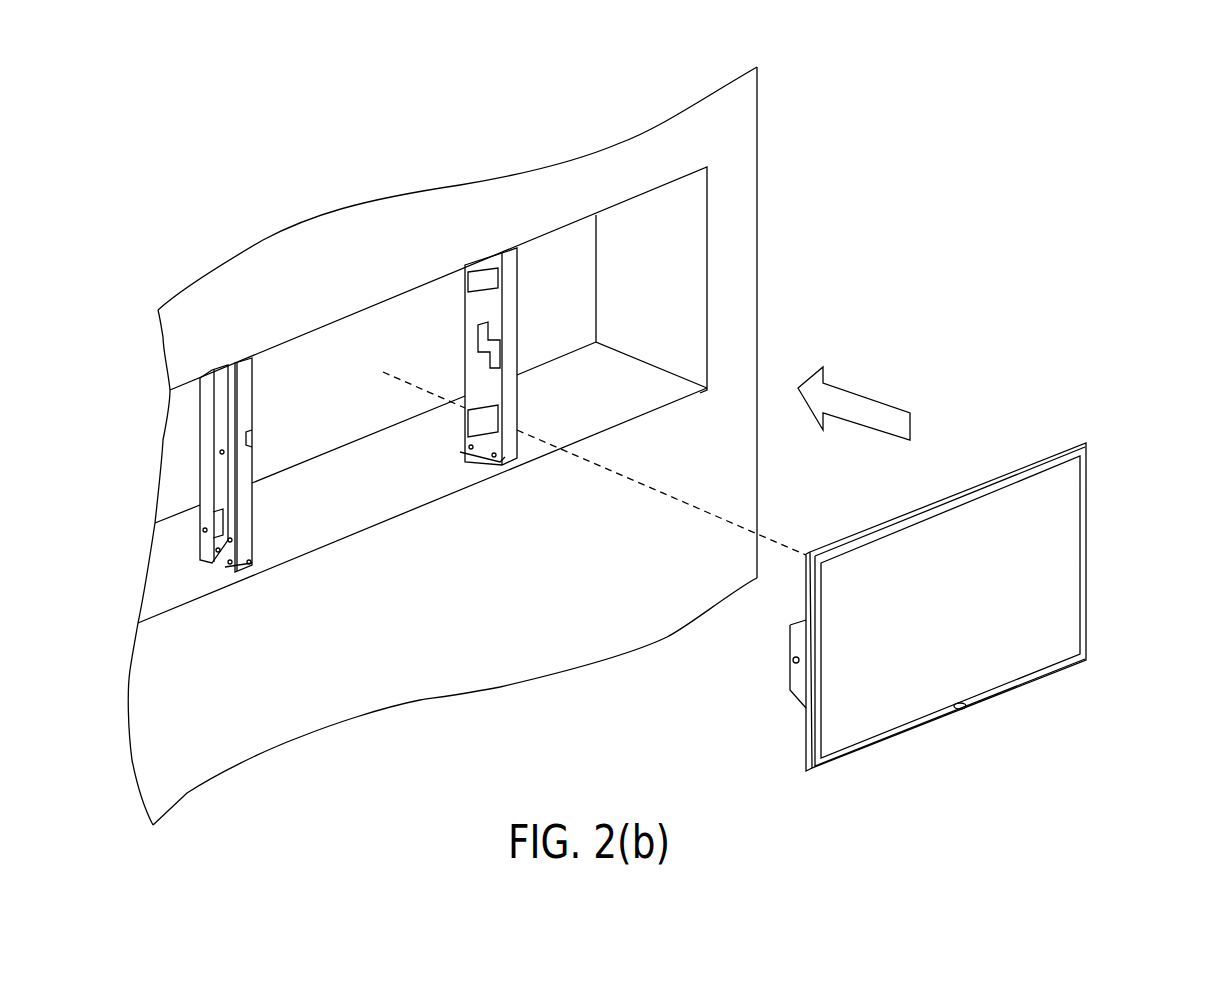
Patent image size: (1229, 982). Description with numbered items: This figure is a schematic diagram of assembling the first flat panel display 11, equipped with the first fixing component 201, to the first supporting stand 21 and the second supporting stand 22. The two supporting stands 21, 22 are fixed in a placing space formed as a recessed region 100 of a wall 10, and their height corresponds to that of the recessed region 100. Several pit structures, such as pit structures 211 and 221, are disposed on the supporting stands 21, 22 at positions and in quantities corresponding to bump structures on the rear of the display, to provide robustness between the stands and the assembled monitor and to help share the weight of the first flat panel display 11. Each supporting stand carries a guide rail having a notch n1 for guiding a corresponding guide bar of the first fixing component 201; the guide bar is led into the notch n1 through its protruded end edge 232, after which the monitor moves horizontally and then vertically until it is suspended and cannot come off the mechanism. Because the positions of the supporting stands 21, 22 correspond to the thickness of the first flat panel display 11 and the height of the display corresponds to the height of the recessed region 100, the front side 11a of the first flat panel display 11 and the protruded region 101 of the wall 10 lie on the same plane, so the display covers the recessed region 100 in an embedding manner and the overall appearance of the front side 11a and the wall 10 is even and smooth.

The wall 10 is at (1217, 76).
The recessed region 100 is at (632, 385).
The protruded region 101 is at (735, 251).
The first flat panel display 11 is at (931, 606).
The front side 11a is at (1062, 563).
The first supporting stand 21 is at (216, 377).
The pit structure 211 is at (245, 392).
The notch n1 is at (248, 437).
The second supporting stand 22 is at (481, 290).
The pit structure 221 is at (517, 262).
The first fixing component 201 is at (764, 655).
The protruded end edge 232 is at (785, 668).